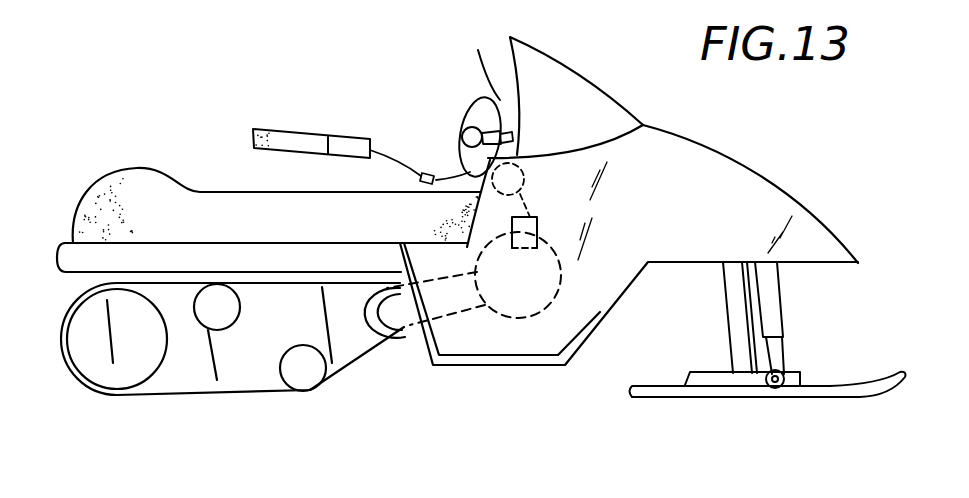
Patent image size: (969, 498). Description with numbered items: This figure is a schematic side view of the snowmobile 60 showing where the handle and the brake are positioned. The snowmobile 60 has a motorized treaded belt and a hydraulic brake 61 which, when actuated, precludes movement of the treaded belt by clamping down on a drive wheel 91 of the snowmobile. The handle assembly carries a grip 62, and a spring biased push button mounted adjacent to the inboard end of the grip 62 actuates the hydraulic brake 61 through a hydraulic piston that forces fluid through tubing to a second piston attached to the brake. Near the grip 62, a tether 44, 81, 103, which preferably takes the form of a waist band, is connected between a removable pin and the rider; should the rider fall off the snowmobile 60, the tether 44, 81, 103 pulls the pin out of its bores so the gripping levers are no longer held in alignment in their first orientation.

The tether 44 is at (350, 103).
The tether 81 is at (420, 165).
The tether 103 is at (427, 178).
The grip 62 is at (463, 117).
The hydraulic brake 61 is at (538, 232).
The snowmobile 60 is at (757, 190).
The drive wheel 91 is at (527, 308).